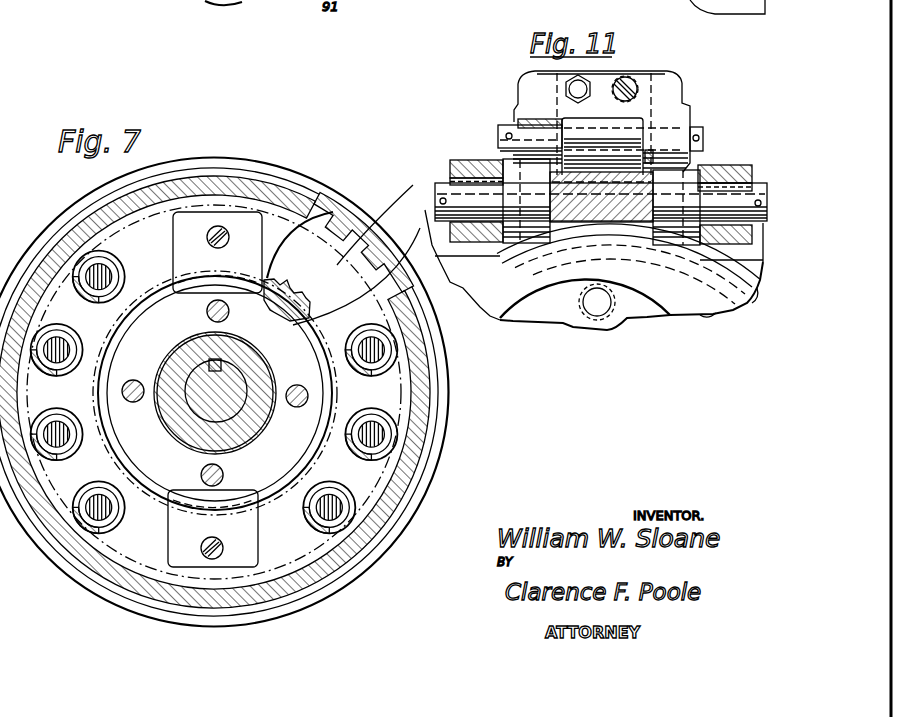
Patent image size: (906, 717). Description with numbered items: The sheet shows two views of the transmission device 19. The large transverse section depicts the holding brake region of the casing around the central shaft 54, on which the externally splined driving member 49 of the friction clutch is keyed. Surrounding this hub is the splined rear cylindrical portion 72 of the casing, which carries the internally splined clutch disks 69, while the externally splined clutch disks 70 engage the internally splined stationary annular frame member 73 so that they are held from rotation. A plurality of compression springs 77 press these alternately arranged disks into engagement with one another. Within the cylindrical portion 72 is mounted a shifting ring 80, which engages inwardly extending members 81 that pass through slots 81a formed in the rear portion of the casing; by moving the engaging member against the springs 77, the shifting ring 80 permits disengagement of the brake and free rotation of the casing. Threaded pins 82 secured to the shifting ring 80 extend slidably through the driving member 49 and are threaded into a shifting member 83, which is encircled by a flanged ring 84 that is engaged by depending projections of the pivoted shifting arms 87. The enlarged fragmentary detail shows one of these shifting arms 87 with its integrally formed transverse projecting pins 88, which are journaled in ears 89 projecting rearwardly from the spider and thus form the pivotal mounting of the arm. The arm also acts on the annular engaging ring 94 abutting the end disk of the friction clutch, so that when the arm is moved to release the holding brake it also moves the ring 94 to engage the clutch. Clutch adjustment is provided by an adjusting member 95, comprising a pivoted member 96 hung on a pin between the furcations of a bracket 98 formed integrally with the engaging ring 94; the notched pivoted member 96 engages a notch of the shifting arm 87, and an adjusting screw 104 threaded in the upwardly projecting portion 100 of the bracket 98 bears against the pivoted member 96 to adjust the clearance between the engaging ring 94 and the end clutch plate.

In FIG. 11, the transmission device 19 is at (633, 80).
In FIG. 7, the driving member 49 is at (248, 378).
In FIG. 7, the shaft 54 is at (257, 370).
In FIG. 7, the clutch disks 69 is at (376, 220).
In FIG. 7, the clutch disks 70 is at (340, 265).
In FIG. 7, the rear cylindrical portion 72 is at (288, 293).
In FIG. 7, the stationary annular frame member 73 is at (384, 235).
In FIG. 7, the compression springs 77 is at (96, 298).
In FIG. 7, the shifting ring 80 is at (145, 318).
In FIG. 7, the inwardly extending members 81 is at (197, 292).
In FIG. 7, the slots 81a is at (173, 250).
In FIG. 7, the threaded pins 82 is at (207, 313).
In FIG. 11, the threaded pins 82 is at (605, 316).
In FIG. 11, the shifting member 83 is at (652, 314).
In FIG. 11, the flanged ring 84 is at (724, 314).
In FIG. 11, the shifting arms 87 is at (630, 172).
In FIG. 11, the projecting pins 88 is at (440, 182).
In FIG. 11, the ears 89 is at (476, 160).
In FIG. 11, the annular engaging ring 94 is at (752, 306).
In FIG. 11, the adjusting members 95 is at (642, 70).
In FIG. 11, the pivoted member 96 is at (582, 76).
In FIG. 11, the bracket 98 is at (682, 77).
In FIG. 11, the upwardly projecting portion 100 is at (548, 70).
In FIG. 11, the adjusting screw 104 is at (620, 79).